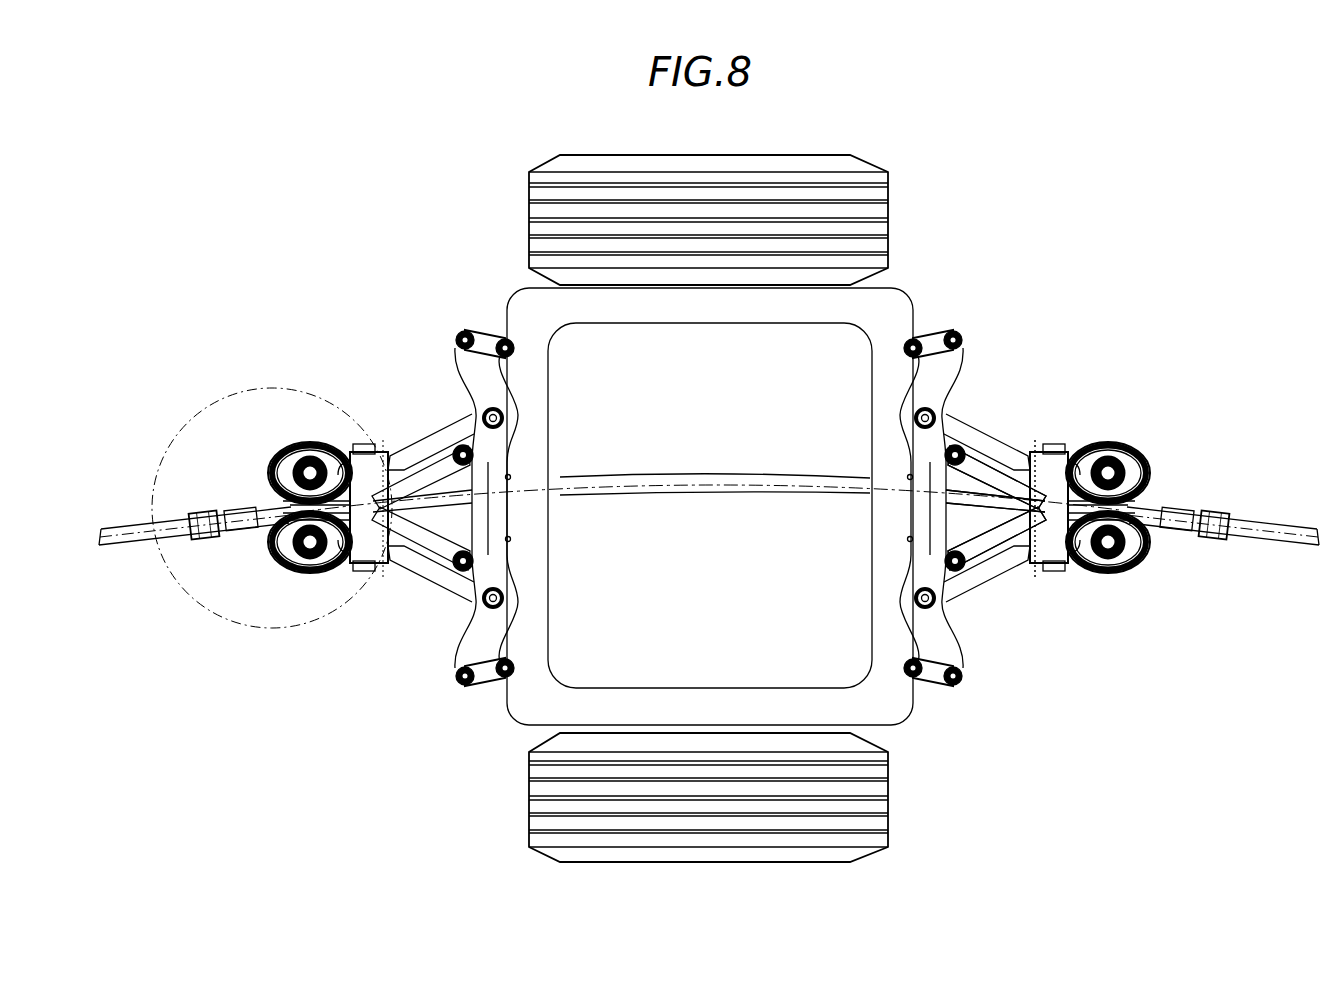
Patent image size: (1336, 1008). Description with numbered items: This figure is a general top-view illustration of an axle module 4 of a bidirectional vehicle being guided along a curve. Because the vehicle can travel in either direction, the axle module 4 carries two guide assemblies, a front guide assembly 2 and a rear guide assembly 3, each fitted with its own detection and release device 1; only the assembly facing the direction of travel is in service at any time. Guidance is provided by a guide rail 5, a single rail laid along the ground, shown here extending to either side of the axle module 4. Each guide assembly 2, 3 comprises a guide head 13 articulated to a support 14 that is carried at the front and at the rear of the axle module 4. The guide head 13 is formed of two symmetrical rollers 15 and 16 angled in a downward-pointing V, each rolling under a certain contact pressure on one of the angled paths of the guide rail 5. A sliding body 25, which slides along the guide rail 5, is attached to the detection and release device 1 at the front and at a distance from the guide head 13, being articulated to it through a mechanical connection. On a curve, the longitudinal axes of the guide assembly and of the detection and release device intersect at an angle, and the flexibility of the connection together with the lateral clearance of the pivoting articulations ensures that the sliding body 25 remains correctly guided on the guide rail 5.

The detection and release device 1 is at (215, 562).
The front guide assembly 2 is at (362, 402).
The rear guide assembly 3 is at (996, 510).
The axle module 4 is at (975, 203).
The guide rail 5 is at (122, 520).
The guide head 13 is at (333, 600).
The support 14 is at (423, 436).
The roller 15 is at (298, 440).
The roller 16 is at (340, 580).
The sliding body 25 is at (205, 500).